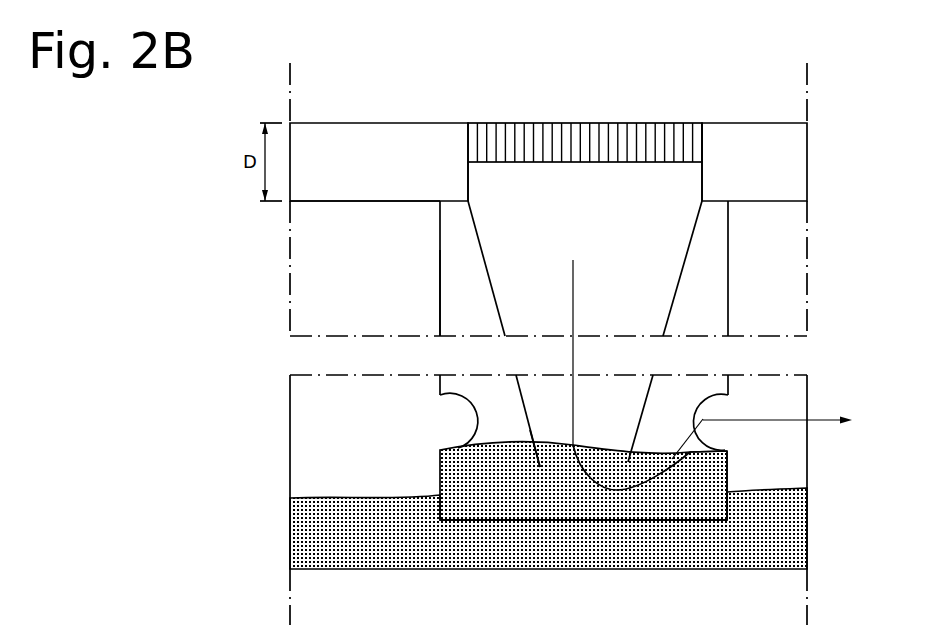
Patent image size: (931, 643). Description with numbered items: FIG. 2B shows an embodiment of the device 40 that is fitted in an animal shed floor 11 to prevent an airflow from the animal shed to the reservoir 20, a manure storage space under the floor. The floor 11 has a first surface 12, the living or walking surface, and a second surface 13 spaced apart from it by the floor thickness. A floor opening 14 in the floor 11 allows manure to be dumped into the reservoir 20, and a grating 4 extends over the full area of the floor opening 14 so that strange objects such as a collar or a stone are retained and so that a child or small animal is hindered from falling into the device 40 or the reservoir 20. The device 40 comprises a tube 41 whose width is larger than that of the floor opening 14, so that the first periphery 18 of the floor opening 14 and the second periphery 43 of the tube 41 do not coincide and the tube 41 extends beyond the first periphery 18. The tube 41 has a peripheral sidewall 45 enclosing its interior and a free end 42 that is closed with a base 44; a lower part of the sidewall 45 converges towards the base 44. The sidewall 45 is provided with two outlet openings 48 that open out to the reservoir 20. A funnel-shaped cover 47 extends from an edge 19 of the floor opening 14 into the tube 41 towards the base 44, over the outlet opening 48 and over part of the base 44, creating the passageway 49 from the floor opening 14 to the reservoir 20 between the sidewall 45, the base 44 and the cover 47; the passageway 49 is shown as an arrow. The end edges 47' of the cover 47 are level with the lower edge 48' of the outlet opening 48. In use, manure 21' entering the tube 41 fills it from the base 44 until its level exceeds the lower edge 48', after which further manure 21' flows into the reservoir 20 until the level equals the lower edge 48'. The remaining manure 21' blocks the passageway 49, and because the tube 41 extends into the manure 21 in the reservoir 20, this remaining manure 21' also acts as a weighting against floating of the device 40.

The grating 4 is at (577, 128).
The animal shed floor 11 is at (360, 147).
The first surface 12 is at (767, 123).
The second surface 13 is at (337, 201).
The floor opening 14 is at (522, 103).
The first periphery 18 is at (468, 183).
The edge 19 is at (700, 123).
The reservoir 20 is at (346, 441).
The manure 21 is at (548, 528).
The manure 21' is at (583, 481).
The device 40 is at (365, 291).
The tube 41 is at (440, 243).
The free end 42 is at (727, 512).
The second periphery 43 is at (440, 279).
The base 44 is at (632, 520).
The sidewall 45 is at (728, 253).
The cover 47 is at (585, 334).
The end edges 47' is at (546, 522).
The outlet opening 48 is at (625, 417).
The lower edge 48' is at (744, 467).
The passageway 49 is at (681, 433).